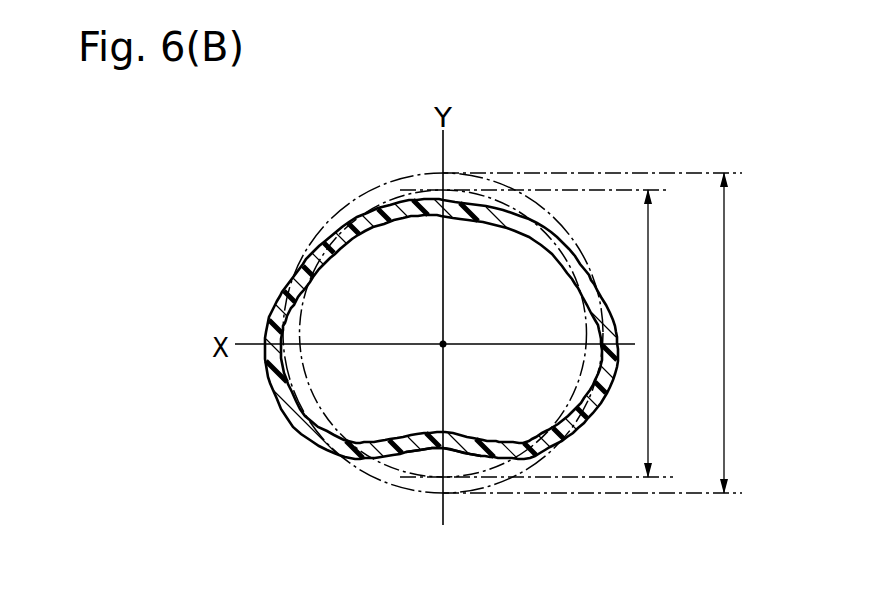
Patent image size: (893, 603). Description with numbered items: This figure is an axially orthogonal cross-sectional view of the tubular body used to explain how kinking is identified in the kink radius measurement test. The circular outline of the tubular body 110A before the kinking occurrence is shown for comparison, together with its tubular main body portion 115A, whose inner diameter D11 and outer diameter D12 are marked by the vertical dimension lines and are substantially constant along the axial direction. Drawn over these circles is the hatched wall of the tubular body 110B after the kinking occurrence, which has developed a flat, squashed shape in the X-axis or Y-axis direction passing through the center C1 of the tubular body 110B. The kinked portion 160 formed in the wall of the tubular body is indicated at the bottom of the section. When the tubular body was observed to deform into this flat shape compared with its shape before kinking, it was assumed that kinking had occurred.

The tubular body 110A is at (366, 196).
The tubular main body portion 115A is at (318, 232).
The tubular body 110B is at (275, 308).
The kinked portion 160 is at (436, 459).
The center C1 is at (443, 344).
The inner diameter D11 is at (551, 333).
The outer diameter D12 is at (611, 333).